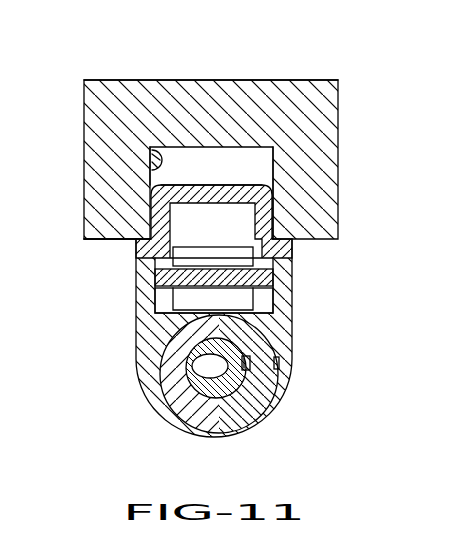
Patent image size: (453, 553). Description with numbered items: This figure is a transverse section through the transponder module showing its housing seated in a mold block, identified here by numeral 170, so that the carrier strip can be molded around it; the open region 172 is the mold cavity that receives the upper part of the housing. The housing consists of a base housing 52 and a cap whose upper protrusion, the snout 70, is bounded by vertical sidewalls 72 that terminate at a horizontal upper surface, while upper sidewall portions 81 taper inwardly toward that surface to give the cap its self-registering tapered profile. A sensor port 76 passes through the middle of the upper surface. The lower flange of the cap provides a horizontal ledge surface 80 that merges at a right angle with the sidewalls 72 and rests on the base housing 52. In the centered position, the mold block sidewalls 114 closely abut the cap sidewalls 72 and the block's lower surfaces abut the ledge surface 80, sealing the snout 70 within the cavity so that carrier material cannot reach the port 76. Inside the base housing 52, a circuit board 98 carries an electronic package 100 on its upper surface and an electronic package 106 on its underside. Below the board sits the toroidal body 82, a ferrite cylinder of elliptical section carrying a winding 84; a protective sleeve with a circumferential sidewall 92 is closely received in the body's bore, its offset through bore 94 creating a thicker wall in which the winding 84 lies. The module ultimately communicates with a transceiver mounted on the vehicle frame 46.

The vehicle frame 46 is at (107, 243).
The base housing 52 is at (167, 423).
The snout 70 is at (285, 210).
The vertical sidewalls 72 is at (150, 208).
The sensor port 76 is at (214, 185).
The horizontal ledge surface 80 is at (134, 235).
The upper sidewall portions 81 is at (271, 183).
The toroidal body 82 is at (263, 381).
The winding 84 is at (279, 358).
The circumferential sidewall 92 is at (220, 388).
The through bore 94 is at (208, 362).
The circuit board 98 is at (258, 278).
The electronic package 100 is at (208, 246).
The electronic package 106 is at (195, 300).
The mold block sidewalls 114 is at (155, 150).
The housing top 170 is at (263, 87).
The cavity gap 172 is at (188, 173).